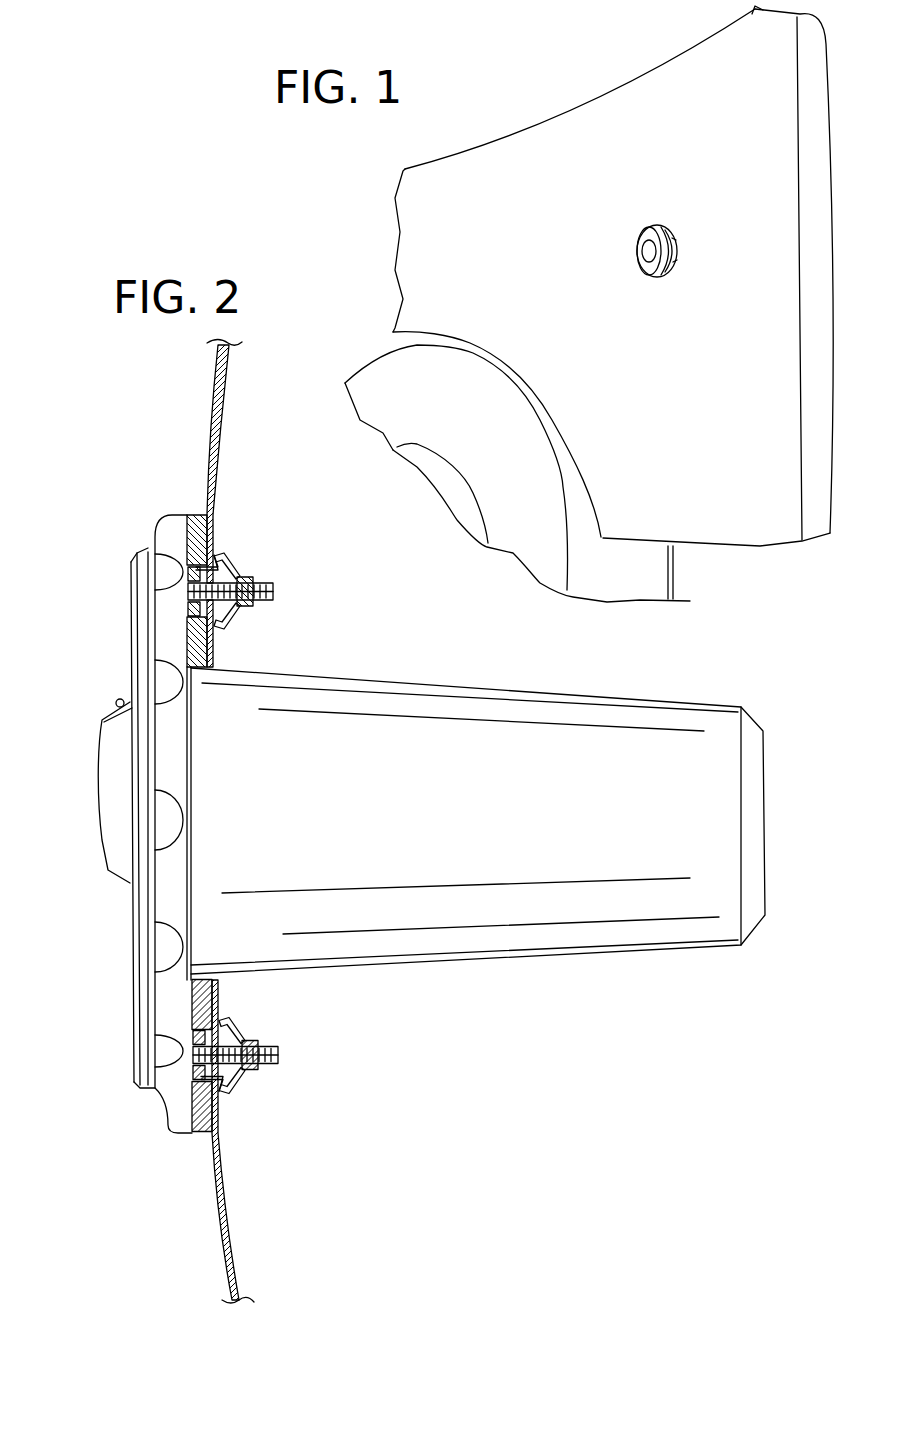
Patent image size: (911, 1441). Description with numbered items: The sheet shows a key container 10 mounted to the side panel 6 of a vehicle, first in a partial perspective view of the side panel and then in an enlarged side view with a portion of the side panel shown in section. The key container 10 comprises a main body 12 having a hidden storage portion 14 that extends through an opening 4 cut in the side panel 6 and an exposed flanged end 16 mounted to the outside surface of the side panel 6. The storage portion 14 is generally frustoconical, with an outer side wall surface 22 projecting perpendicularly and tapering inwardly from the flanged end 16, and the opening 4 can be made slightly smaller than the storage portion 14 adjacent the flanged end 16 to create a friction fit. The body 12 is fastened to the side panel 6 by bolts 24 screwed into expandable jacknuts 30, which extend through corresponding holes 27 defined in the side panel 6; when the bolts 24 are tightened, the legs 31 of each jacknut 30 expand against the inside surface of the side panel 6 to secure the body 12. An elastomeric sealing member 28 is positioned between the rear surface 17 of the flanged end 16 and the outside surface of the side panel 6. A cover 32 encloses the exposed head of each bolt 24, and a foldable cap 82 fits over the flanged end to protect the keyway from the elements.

In FIG. 2, the opening 4 is at (212, 677).
In FIG. 1, the side panel 6 is at (724, 545).
In FIG. 2, the side panel 6 is at (216, 1216).
In FIG. 1, the key container 10 is at (628, 225).
In FIG. 2, the key container 10 is at (394, 818).
In FIG. 2, the main body 12 is at (404, 964).
In FIG. 2, the hidden storage portion 14 is at (603, 953).
In FIG. 2, the exposed flanged end 16 is at (165, 1123).
In FIG. 2, the rear surface 17 is at (182, 530).
In FIG. 2, the outer side wall surface 22 is at (451, 692).
In FIG. 2, the bolts 24 is at (270, 587).
In FIG. 2, the holes 27 is at (213, 560).
In FIG. 2, the elastomeric sealing member 28 is at (197, 515).
In FIG. 2, the expandable jacknuts 30 is at (263, 610).
In FIG. 2, the legs 31 is at (230, 560).
In FIG. 2, the cover 32 is at (135, 1043).
In FIG. 2, the foldable cap 82 is at (93, 763).